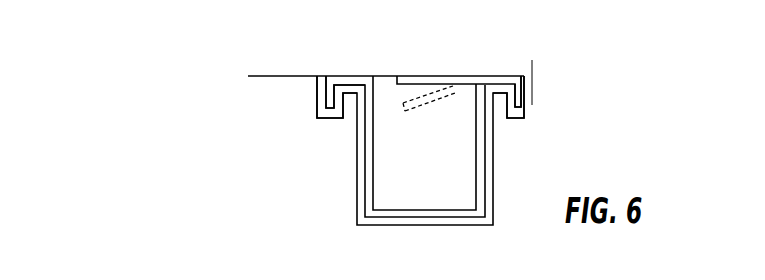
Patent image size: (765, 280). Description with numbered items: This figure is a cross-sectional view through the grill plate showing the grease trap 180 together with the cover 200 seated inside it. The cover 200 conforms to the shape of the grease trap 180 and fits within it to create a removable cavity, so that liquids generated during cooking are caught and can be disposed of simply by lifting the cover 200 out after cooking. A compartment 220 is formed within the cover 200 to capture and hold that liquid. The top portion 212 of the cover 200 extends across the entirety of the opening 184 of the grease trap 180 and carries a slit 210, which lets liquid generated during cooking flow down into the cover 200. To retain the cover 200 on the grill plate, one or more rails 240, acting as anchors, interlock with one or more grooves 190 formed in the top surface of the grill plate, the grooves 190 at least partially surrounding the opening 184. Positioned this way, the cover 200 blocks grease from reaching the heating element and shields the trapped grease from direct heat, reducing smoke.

The grease trap 180 is at (496, 184).
The opening 184 is at (322, 78).
The grooves 190 is at (522, 118).
The cover 200 is at (377, 148).
The slit 210 is at (403, 80).
The top portion 212 is at (450, 84).
The compartment 220 is at (441, 188).
The rails 240 is at (518, 94).